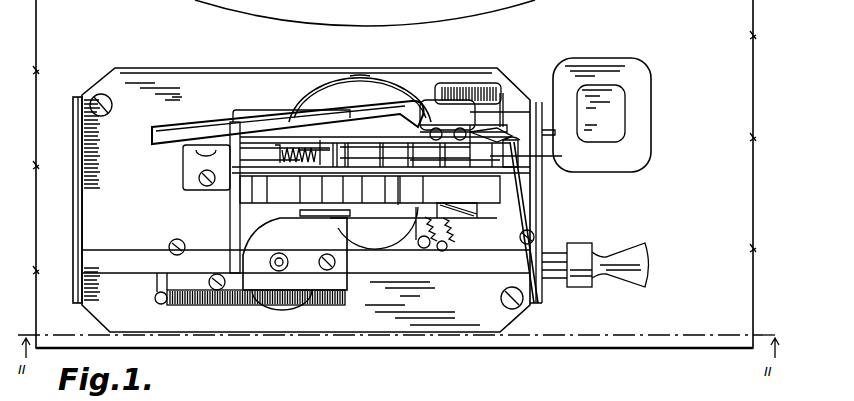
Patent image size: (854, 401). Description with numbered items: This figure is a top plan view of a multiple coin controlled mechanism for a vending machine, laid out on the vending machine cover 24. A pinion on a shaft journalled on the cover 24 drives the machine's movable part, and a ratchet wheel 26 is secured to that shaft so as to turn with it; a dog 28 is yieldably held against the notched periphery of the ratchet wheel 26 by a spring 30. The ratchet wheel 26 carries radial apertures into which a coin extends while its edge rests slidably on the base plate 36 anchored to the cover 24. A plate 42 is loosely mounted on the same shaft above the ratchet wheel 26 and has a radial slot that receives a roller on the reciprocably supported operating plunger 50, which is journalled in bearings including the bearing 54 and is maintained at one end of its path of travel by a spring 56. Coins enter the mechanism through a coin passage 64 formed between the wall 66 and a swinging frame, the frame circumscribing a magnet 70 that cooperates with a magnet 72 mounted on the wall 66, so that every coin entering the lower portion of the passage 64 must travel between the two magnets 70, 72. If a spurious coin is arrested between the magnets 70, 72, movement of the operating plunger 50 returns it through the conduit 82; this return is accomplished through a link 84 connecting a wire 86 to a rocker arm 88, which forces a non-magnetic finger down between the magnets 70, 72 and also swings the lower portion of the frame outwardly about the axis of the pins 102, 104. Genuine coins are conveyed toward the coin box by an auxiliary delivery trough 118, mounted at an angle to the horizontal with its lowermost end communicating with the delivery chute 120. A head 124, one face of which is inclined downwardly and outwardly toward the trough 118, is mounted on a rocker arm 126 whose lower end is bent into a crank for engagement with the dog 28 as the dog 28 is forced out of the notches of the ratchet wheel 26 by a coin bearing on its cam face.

The vending machine cover 24 is at (754, 275).
The ratchet wheel 26 is at (322, 80).
The dog 28 is at (436, 85).
The spring 30 is at (446, 234).
The base plate 36 is at (194, 78).
The plate 42 is at (366, 85).
The operating plunger 50 is at (478, 275).
The bearing 54 is at (246, 240).
The spring 56 is at (225, 305).
The coin passage 64 is at (538, 148).
The wall 66 is at (256, 160).
The magnet 70 is at (447, 120).
The magnet 72 is at (393, 205).
The conduit 82 is at (548, 168).
The link 84 is at (400, 242).
The wire 86 is at (358, 217).
The rocker arm 88 is at (370, 197).
The pin 102 is at (330, 140).
The pin 104 is at (463, 124).
The auxiliary delivery trough 118 is at (258, 122).
The delivery chute 120 is at (165, 103).
The head 124 is at (478, 135).
The rocker arm 126 is at (506, 110).